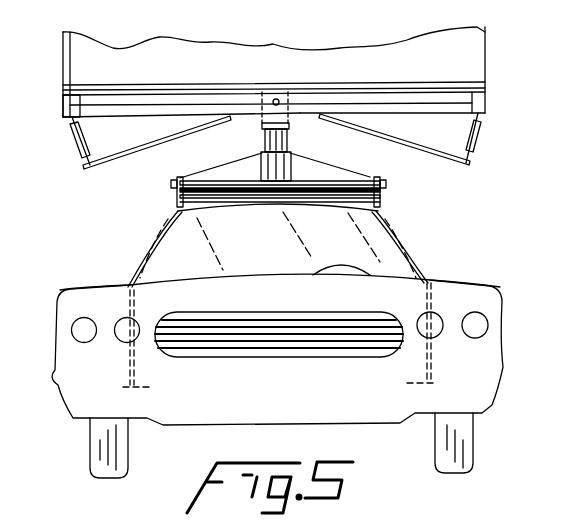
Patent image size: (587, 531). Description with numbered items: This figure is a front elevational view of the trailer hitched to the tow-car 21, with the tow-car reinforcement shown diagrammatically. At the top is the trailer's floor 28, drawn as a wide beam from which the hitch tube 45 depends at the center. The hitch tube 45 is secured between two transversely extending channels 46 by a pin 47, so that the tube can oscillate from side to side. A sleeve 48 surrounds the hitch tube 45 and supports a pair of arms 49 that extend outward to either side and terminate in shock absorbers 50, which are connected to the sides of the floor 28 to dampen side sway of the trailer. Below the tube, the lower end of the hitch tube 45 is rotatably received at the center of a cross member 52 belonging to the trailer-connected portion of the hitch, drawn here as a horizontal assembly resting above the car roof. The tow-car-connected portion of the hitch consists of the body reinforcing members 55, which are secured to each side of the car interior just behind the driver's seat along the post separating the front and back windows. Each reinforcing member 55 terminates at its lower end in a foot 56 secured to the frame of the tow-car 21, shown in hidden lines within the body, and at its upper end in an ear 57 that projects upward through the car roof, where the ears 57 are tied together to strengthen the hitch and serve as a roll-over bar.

The tow-car 21 is at (495, 349).
The floor 28 is at (449, 93).
The hitch tube 45 is at (288, 137).
The transversely extending channels 46 is at (408, 105).
The pin 47 is at (271, 98).
The sleeve 48 is at (260, 110).
The arms 49 is at (147, 148).
The shock absorbers 50 is at (76, 145).
The cross member 52 is at (318, 170).
The tow-car body reinforcing members 55 is at (150, 257).
The foot 56 is at (155, 393).
The ear 57 is at (170, 199).